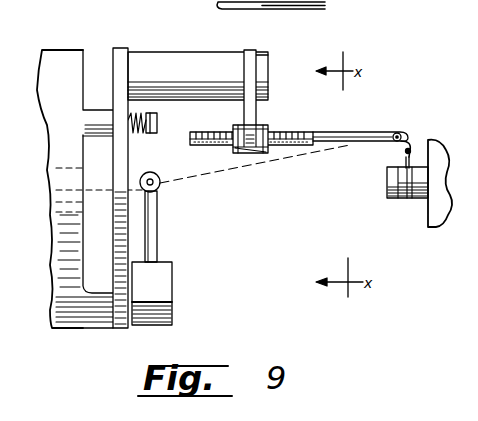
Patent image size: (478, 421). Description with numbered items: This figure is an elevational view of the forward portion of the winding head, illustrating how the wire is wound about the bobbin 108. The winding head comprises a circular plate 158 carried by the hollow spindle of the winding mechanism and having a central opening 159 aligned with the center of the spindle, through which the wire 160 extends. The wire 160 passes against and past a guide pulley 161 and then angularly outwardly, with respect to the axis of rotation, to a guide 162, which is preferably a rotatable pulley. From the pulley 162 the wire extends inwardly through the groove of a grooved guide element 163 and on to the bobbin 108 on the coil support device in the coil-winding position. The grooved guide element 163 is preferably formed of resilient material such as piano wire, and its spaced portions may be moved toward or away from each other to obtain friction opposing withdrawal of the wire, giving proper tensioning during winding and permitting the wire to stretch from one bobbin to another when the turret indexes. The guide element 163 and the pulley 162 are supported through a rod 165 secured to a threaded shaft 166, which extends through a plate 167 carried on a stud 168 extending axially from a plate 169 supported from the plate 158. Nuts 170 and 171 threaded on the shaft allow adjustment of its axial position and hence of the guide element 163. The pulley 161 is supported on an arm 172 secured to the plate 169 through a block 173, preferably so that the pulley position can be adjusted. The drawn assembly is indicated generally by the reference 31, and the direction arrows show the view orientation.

The cam follower assembly 31 is at (262, 227).
The bobbin 108 is at (392, 183).
The circular plate 158 is at (68, 54).
The central opening 159 is at (58, 196).
The wire 160 is at (213, 178).
The guide pulley 161 is at (157, 180).
The guide 162 is at (394, 144).
The grooved guide element 163 is at (410, 150).
The rod 165 is at (336, 130).
The threaded shaft 166 is at (285, 130).
The plate 167 is at (246, 103).
The stud 168 is at (172, 63).
The plate 169 is at (122, 50).
The nut 170 is at (240, 153).
The nut 171 is at (266, 153).
The arm 172 is at (158, 230).
The block 173 is at (172, 276).